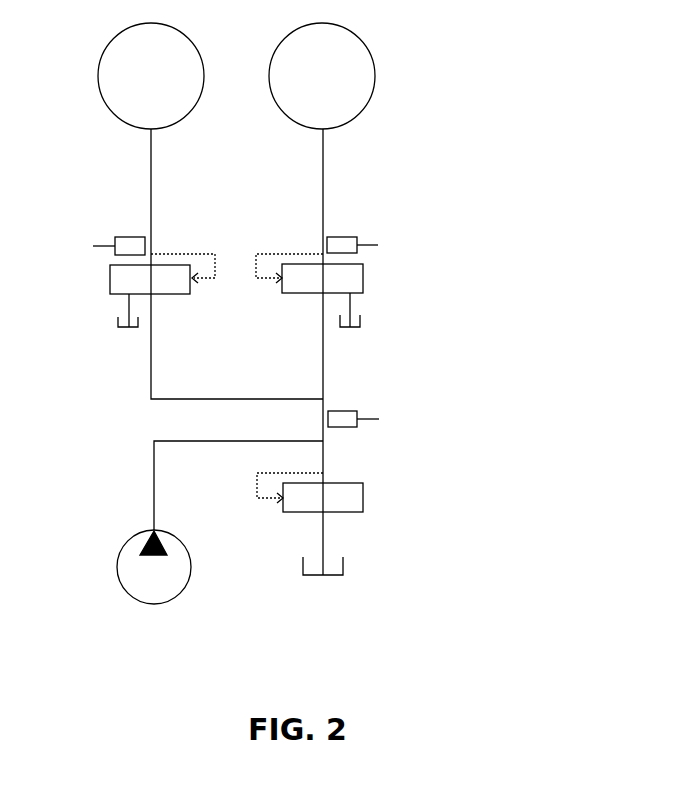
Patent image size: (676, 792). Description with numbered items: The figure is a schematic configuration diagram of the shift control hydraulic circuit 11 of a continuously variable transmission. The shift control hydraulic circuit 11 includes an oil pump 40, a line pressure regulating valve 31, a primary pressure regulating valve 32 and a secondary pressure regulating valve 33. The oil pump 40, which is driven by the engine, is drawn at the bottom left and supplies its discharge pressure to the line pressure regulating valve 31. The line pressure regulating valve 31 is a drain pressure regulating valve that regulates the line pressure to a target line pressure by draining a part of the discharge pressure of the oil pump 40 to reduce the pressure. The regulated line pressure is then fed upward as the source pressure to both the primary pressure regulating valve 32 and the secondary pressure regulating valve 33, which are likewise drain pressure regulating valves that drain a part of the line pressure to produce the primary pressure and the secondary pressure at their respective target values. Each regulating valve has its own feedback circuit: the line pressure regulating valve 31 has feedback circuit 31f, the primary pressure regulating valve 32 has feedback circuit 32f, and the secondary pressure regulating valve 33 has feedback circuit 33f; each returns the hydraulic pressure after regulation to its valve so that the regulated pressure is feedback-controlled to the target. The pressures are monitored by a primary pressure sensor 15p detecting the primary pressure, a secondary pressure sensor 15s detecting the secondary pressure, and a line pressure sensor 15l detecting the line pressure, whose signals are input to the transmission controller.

The shift control hydraulic circuit 11 is at (480, 553).
The primary pressure sensor 15p is at (130, 245).
The secondary pressure sensor 15s is at (338, 245).
The line pressure sensor 15l is at (338, 417).
The line pressure regulating valve 31 is at (348, 500).
The feedback circuit 31f is at (257, 487).
The primary pressure regulating valve 32 is at (135, 287).
The feedback circuit 32f is at (193, 254).
The secondary pressure regulating valve 33 is at (347, 274).
The feedback circuit 33f is at (268, 253).
The oil pump 40 is at (132, 575).